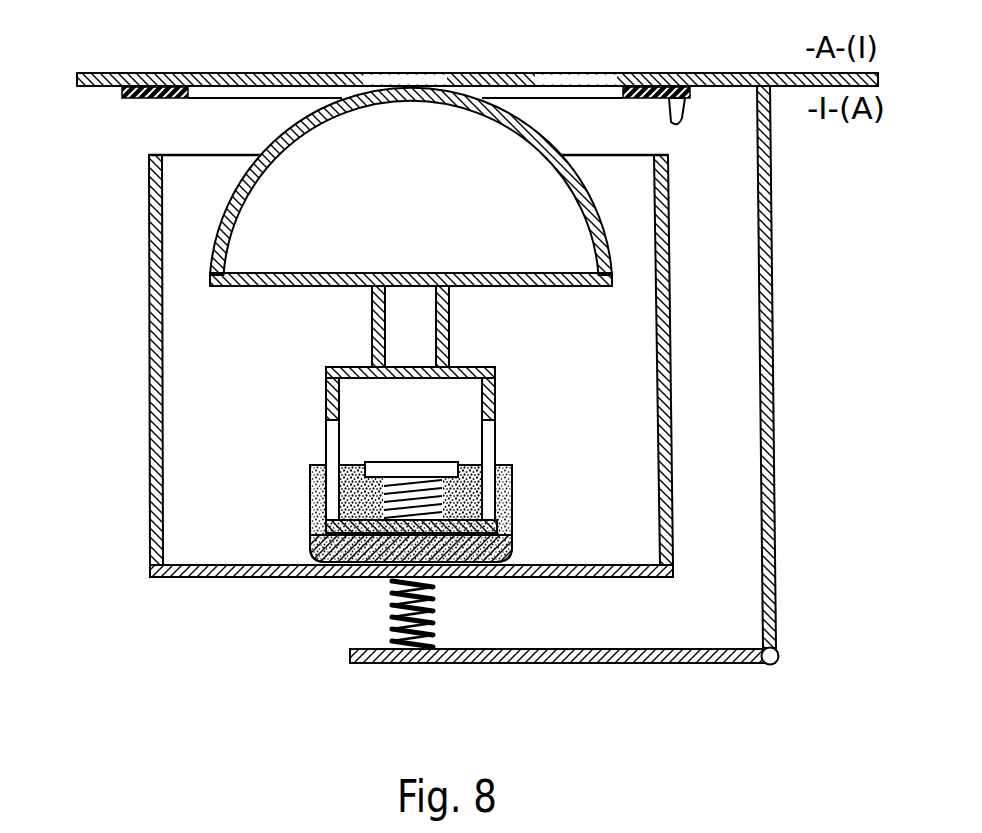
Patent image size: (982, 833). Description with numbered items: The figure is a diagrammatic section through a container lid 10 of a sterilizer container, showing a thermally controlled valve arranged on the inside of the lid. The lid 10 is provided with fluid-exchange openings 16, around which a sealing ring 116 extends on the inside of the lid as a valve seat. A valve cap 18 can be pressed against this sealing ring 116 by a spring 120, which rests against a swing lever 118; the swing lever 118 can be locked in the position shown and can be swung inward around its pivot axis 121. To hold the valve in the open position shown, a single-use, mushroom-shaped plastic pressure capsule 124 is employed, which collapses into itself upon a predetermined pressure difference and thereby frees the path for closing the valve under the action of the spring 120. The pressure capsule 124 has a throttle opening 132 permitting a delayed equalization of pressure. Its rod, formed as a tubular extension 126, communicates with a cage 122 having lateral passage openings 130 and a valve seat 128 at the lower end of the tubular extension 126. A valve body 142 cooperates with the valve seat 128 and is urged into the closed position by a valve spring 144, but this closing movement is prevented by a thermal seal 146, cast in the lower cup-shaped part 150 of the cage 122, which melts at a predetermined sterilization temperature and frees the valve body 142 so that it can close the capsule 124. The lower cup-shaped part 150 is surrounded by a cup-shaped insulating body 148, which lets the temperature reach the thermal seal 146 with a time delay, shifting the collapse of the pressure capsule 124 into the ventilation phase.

The container lid 10 is at (90, 87).
The fluid-exchange openings 16 is at (575, 73).
The valve cap 18 is at (666, 434).
The sealing ring 116 is at (691, 90).
The swing lever 118 is at (546, 662).
The spring 120 is at (444, 610).
The pivot axis 121 is at (772, 665).
The cage 122 is at (494, 383).
The pressure capsule 124 is at (224, 208).
The tubular extension 126 is at (449, 320).
The valve seat 128 is at (390, 377).
The lateral passage openings 130 is at (325, 443).
The throttle opening 132 is at (548, 150).
The valve body 142 is at (433, 468).
The valve spring 144 is at (508, 495).
The thermal seal 146 is at (310, 488).
The insulating body 148 is at (385, 489).
The lower cup-shaped part 150 is at (312, 530).